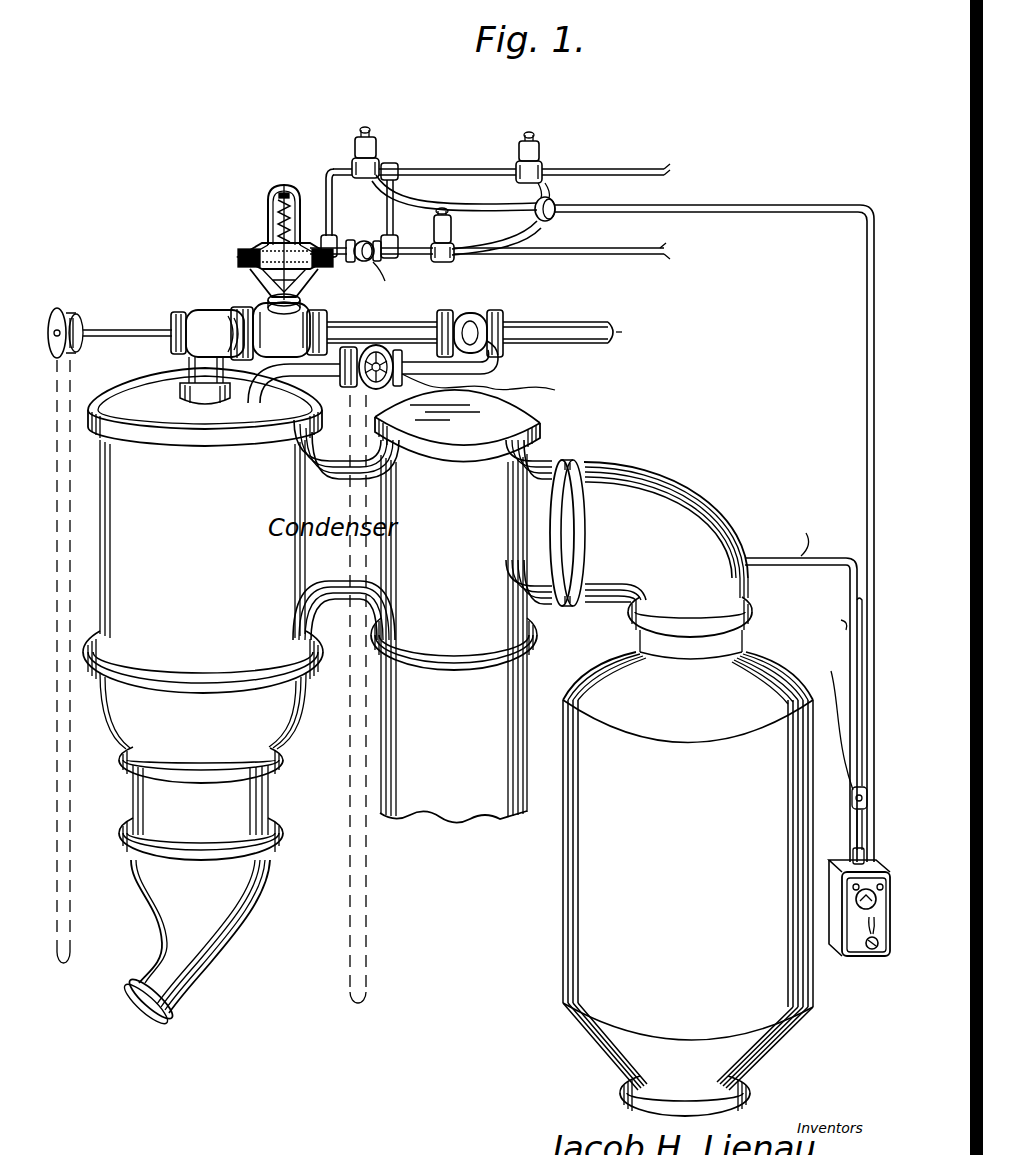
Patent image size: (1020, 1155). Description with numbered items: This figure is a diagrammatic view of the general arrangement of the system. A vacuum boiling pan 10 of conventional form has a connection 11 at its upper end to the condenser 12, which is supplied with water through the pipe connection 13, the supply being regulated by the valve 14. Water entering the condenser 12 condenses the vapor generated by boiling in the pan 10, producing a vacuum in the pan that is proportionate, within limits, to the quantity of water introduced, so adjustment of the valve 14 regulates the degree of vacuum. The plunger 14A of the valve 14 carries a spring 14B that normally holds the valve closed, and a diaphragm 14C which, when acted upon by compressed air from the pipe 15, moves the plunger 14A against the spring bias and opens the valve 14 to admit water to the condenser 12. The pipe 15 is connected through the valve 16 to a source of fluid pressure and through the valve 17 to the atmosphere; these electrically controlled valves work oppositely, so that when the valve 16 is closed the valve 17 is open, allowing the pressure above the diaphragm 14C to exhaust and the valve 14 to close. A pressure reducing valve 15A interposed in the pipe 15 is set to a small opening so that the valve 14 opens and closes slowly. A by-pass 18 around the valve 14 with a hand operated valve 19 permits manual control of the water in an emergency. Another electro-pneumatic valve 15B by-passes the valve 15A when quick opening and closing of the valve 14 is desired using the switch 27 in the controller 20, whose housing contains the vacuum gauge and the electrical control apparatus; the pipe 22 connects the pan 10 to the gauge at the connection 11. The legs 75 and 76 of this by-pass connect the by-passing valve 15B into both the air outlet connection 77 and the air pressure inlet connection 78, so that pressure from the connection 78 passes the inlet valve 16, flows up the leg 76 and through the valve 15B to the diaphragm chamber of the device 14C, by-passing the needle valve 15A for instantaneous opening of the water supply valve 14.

The vacuum boiling pan 10 is at (577, 915).
The connection 11 is at (676, 500).
The condenser 12 is at (316, 582).
The pipe connection 13 is at (565, 322).
The valve 14 is at (253, 307).
The plunger 14A is at (265, 281).
The spring 14B is at (269, 219).
The diaphragm 14C is at (251, 259).
The pipe 15 is at (323, 238).
The pressure reducing valve 15A is at (365, 240).
The electro-pneumatic valve 15B is at (377, 148).
The valve 16 is at (452, 258).
The valve 17 is at (541, 151).
The by-pass 18 is at (499, 357).
The hand operated valve 19 is at (357, 386).
The controller 20 is at (837, 945).
The pipe 22 is at (777, 566).
The switch 27 is at (873, 952).
The leg 75 is at (329, 176).
The leg 76 is at (404, 205).
The air outlet connection 77 is at (462, 168).
The air pressure inlet connection 78 is at (613, 250).